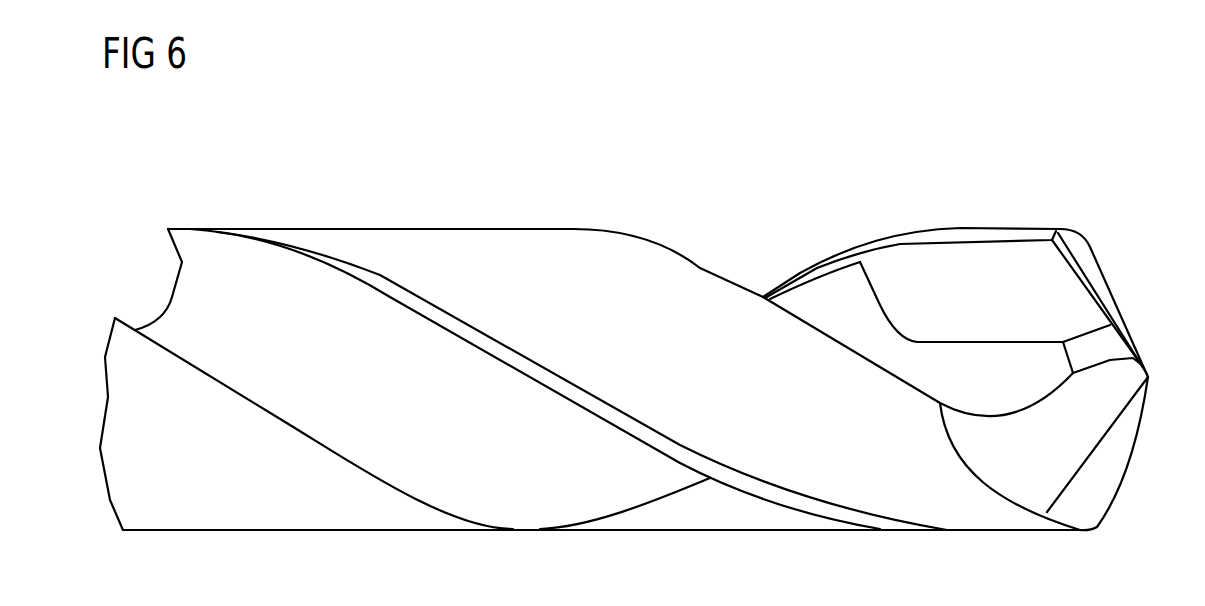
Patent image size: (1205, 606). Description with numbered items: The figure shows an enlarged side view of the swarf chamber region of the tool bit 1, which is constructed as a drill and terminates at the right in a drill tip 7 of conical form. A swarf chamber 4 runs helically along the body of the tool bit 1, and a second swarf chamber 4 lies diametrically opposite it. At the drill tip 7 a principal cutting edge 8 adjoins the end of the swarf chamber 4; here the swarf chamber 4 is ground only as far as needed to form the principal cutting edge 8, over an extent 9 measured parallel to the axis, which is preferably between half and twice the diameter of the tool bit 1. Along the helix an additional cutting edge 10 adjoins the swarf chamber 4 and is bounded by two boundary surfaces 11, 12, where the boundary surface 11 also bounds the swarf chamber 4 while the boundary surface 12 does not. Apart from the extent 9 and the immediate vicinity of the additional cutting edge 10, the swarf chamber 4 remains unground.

The tool bit 1 is at (736, 162).
The swarf chamber 4 is at (200, 300).
The drill tip 7 is at (1131, 288).
The principal cutting edge 8 is at (1080, 288).
The extent 9 is at (977, 260).
The additional cutting edge 10 is at (663, 453).
The boundary surface 11 is at (422, 325).
The boundary surface 12 is at (513, 243).